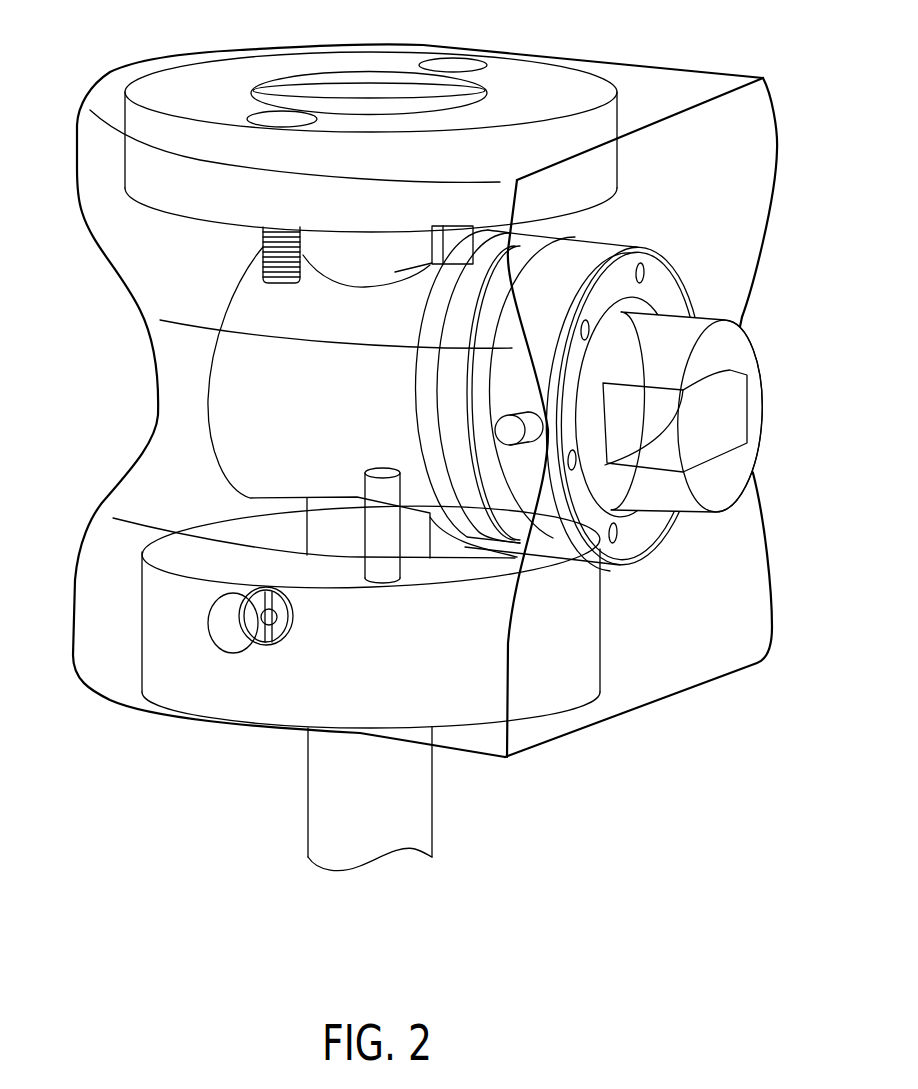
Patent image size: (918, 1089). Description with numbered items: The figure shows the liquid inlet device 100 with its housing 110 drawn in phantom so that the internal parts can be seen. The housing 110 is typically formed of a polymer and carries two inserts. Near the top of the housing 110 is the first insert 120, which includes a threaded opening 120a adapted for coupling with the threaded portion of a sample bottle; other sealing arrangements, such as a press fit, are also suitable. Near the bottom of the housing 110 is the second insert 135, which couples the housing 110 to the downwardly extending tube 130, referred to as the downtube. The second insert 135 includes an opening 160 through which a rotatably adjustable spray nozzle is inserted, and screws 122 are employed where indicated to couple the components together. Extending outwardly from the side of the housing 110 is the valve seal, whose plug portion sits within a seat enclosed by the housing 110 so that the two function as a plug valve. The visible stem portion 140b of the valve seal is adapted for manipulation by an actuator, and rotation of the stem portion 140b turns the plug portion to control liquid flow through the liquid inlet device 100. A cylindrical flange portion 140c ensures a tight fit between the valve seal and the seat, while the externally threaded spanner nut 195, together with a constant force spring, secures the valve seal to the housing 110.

The liquid inlet device 100 is at (156, 748).
The housing 110 is at (757, 633).
The first insert 120 is at (137, 158).
The threaded opening 120a is at (373, 86).
The screws 122 is at (262, 245).
The downwardly extending tube 130 is at (420, 795).
The second insert 135 is at (160, 575).
The stem portion 140b is at (738, 453).
The cylindrical flange portion 140c is at (485, 288).
The opening 160 is at (266, 628).
The externally threaded spanner nut 195 is at (650, 530).